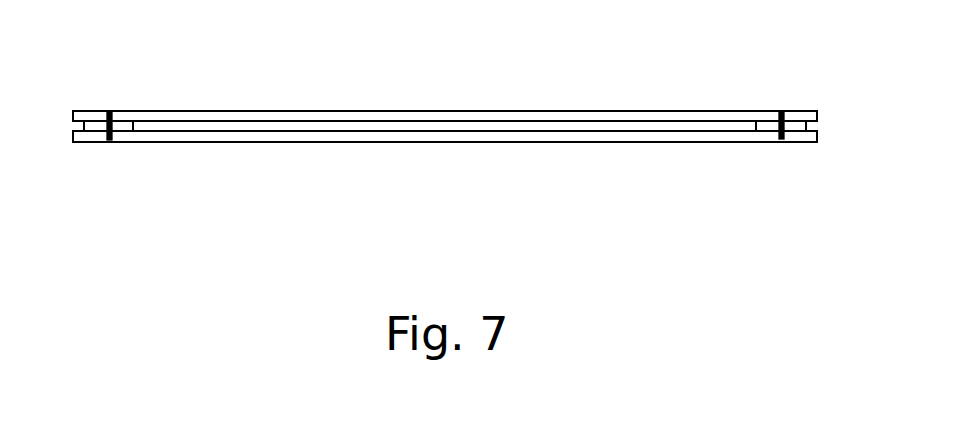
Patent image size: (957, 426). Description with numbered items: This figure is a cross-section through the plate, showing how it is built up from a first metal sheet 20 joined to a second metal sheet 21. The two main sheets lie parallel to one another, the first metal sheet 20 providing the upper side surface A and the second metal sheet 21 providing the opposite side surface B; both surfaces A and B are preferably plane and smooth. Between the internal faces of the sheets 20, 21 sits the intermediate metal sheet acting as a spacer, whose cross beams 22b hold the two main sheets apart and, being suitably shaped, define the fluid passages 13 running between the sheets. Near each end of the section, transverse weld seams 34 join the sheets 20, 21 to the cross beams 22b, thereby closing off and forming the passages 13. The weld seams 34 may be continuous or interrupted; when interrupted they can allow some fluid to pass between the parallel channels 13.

The first metal sheet 20 is at (584, 115).
The second metal sheet 21 is at (500, 135).
The passages 13 is at (336, 125).
The cross beams 22b is at (96, 126).
The weld seams 34 is at (104, 111).
The side surface A is at (244, 94).
The side surface B is at (195, 158).